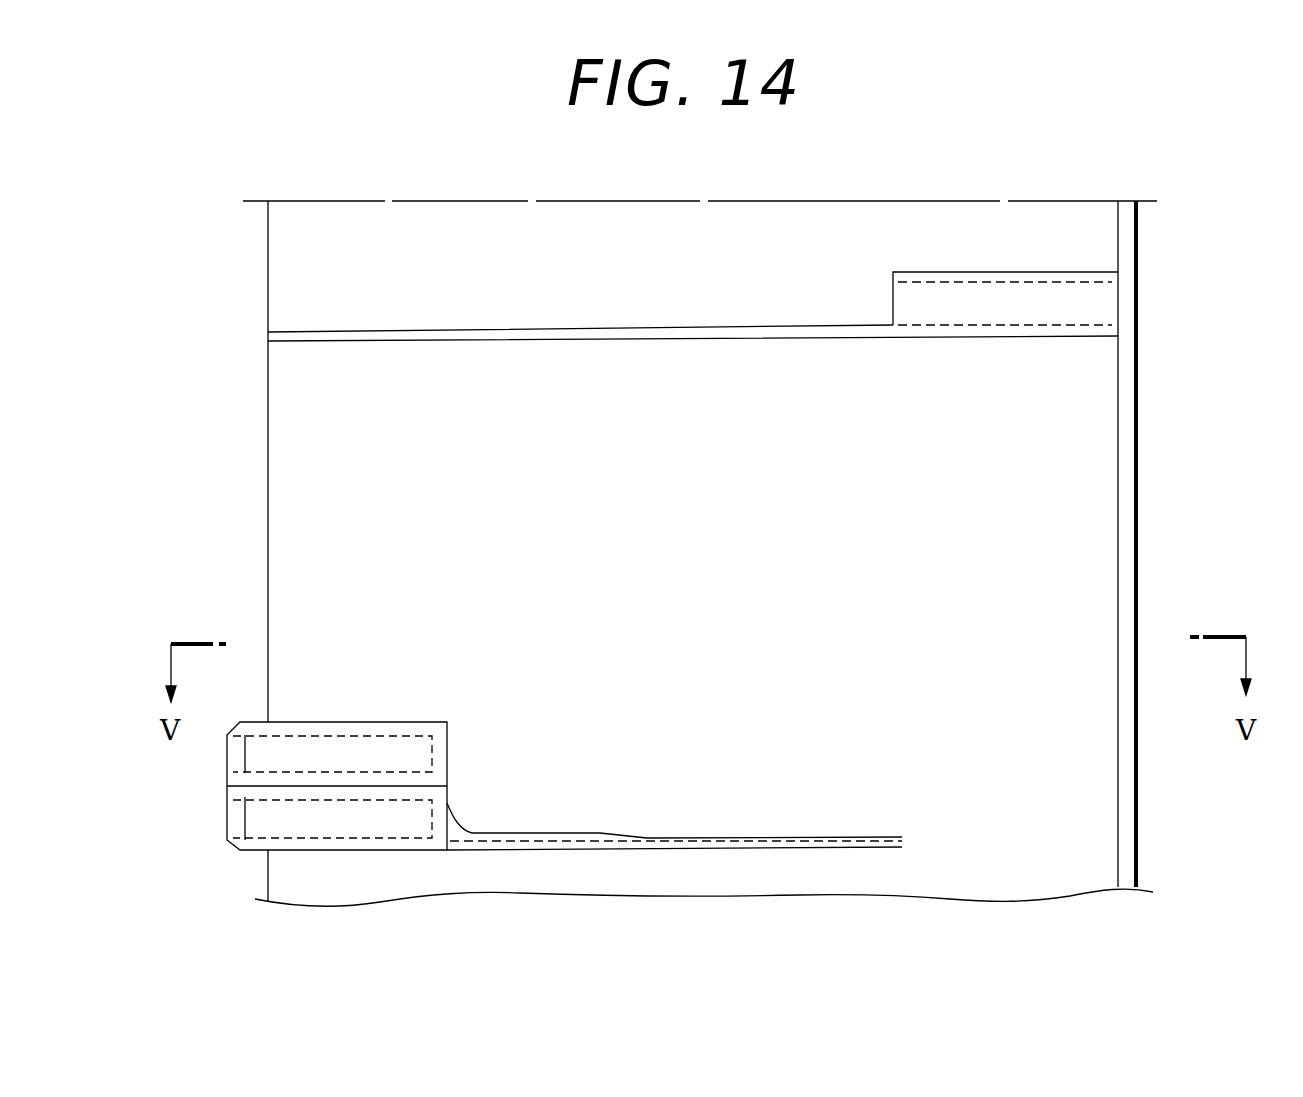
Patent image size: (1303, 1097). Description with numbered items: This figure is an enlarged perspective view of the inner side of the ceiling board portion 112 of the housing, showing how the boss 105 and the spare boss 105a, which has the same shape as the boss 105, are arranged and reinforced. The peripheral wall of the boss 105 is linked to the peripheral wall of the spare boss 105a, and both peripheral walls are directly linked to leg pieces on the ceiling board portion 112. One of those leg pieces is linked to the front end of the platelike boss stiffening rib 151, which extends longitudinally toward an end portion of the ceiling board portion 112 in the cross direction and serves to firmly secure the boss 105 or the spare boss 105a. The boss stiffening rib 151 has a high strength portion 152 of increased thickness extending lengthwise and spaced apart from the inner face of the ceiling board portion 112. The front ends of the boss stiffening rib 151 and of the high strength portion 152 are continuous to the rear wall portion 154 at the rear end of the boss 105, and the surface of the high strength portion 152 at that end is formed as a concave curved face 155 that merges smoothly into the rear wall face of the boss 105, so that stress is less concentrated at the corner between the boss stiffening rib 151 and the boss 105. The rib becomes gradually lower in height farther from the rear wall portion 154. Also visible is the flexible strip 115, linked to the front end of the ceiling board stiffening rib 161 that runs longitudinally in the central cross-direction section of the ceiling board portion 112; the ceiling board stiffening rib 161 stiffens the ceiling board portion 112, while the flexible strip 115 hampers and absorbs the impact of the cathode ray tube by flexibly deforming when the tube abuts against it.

The ceiling board portion 112 is at (268, 506).
The flexible strip 115 is at (975, 272).
The ceiling board stiffening rib 161 is at (558, 328).
The boss 105 is at (376, 728).
The spare boss 105a is at (383, 722).
The boss stiffening rib 151 is at (786, 837).
The high strength portion 152 is at (558, 832).
The rear wall portion 154 is at (452, 812).
The concave curved face 155 is at (470, 827).